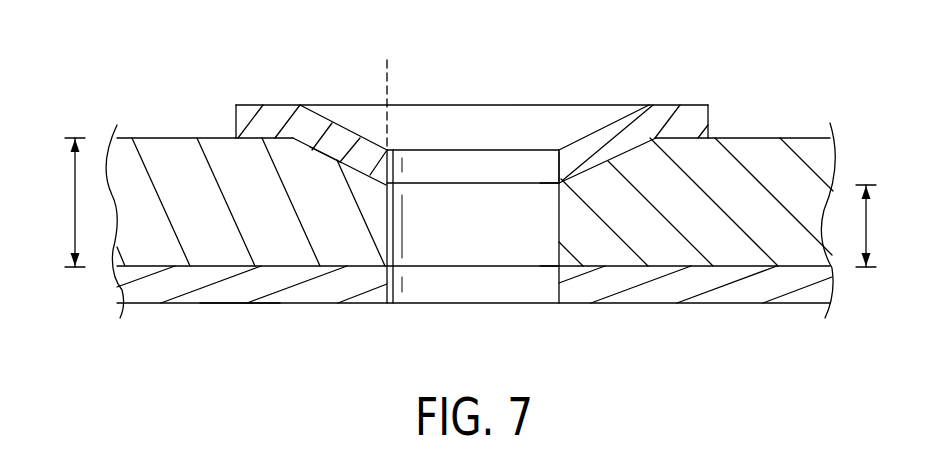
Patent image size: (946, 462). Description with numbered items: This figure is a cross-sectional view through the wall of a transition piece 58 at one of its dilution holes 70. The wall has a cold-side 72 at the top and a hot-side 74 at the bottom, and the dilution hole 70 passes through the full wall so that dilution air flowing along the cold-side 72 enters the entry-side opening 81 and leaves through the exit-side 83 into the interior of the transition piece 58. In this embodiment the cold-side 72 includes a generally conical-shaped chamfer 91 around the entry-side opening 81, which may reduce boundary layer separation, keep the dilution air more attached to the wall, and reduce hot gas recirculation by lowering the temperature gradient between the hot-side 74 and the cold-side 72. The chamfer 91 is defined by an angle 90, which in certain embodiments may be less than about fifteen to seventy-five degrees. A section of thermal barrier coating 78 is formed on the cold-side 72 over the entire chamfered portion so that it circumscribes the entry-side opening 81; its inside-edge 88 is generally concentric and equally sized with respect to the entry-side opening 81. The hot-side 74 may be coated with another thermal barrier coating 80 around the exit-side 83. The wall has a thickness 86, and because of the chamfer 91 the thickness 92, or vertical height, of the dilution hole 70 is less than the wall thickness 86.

The transition piece 58 is at (828, 160).
The dilution hole 70 is at (490, 230).
The cold-side 72 is at (750, 132).
The hot-side 74 is at (622, 268).
The thermal barrier coating section 78 is at (597, 130).
The thermal barrier coating 80 is at (240, 304).
The entry-side opening 81 is at (553, 191).
The exit-side 83 is at (553, 258).
The thickness 86 is at (73, 204).
The inside-edge 88 is at (553, 167).
The angle 90 is at (386, 110).
The chamfer 91 is at (331, 162).
The thickness 92 is at (866, 228).